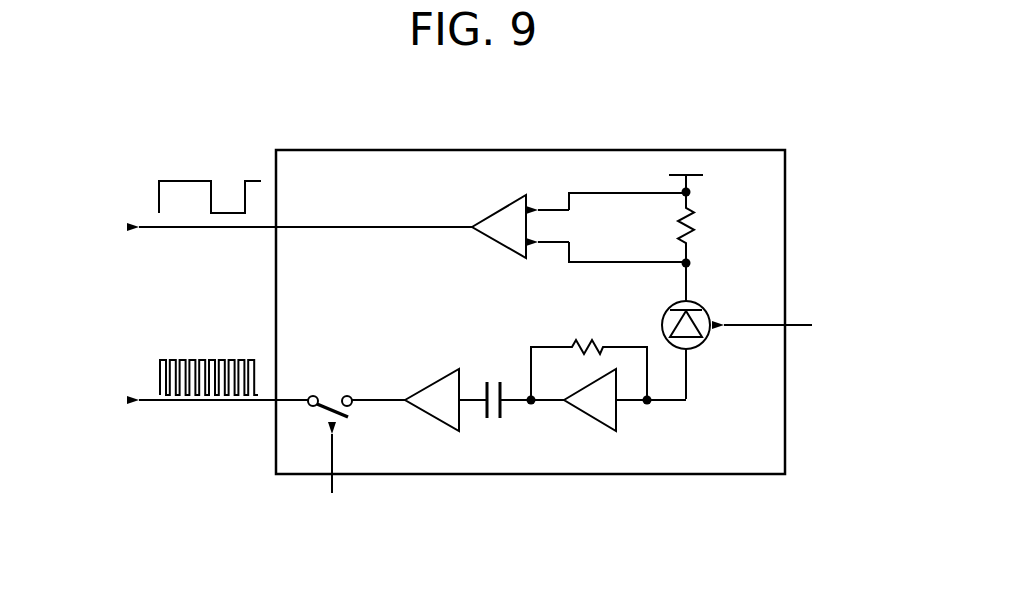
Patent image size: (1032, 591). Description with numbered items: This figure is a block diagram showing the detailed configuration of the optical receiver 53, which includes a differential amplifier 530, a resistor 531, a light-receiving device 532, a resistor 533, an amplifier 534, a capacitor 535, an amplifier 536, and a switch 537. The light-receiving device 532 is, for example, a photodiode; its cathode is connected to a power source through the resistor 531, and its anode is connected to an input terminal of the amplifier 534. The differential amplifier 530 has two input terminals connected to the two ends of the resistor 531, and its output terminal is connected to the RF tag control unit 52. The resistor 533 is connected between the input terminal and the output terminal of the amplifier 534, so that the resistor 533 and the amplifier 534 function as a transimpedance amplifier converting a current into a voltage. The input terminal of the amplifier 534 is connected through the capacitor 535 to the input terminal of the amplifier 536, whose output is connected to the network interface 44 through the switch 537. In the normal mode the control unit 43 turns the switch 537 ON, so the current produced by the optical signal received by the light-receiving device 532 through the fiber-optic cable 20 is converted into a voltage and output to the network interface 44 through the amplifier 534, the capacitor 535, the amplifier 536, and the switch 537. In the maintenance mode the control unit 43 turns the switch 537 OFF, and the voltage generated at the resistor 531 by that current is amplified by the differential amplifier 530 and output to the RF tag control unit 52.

The optical receiver 53 is at (600, 107).
The RF tag control unit 52 is at (282, 211).
The network interface 44 is at (201, 386).
The control unit 43 is at (332, 480).
The fiber-optic cable 20 is at (785, 325).
The differential amplifier 530 is at (496, 209).
The resistor 531 is at (698, 221).
The light-receiving device 532 is at (665, 309).
The resistor 533 is at (580, 340).
The amplifier 534 is at (592, 420).
The capacitor 535 is at (490, 380).
The amplifier 536 is at (436, 420).
The switch 537 is at (331, 392).